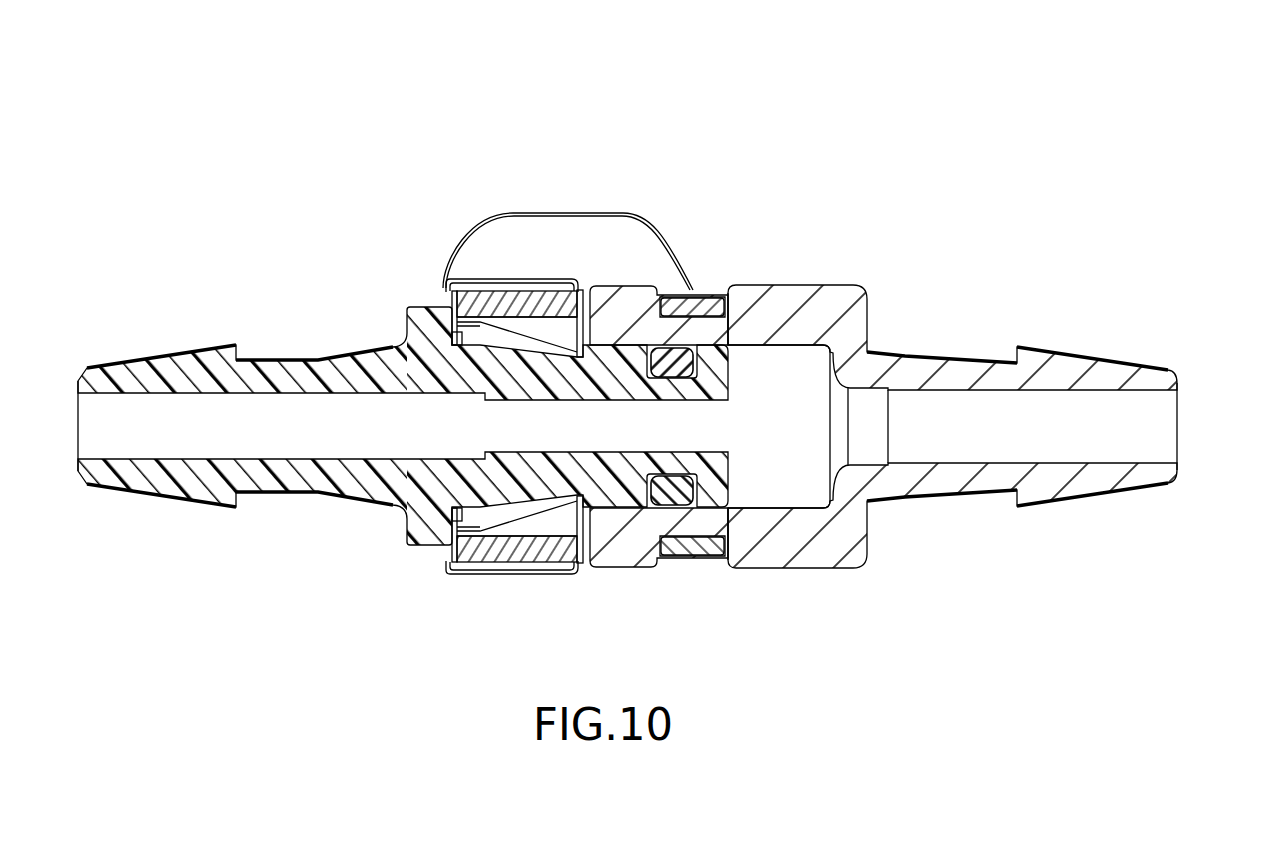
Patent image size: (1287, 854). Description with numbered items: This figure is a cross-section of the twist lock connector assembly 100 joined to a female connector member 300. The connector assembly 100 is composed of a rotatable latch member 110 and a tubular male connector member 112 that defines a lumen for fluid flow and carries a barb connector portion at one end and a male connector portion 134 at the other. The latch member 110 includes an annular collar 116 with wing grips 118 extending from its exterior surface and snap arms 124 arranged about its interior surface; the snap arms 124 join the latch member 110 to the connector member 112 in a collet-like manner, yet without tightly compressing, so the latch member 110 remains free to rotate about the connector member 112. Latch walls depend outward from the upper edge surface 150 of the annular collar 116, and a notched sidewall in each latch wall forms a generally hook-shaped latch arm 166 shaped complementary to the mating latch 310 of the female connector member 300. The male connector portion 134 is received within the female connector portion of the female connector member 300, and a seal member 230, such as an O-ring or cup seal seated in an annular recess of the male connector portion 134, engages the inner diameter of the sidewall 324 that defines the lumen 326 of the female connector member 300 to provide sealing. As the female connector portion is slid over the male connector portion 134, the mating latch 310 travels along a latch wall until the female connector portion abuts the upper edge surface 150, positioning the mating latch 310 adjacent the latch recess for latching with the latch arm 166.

The twist lock connector assembly 100 is at (457, 107).
The rotatable latch member 110 is at (575, 142).
The male connector member 112 is at (299, 171).
The annular collar 116 is at (467, 298).
The wing grips 118 is at (610, 228).
The snap arms 124 is at (510, 318).
The male connector portion 134 is at (730, 482).
The upper edge surface 150 is at (580, 562).
The latch arm 166 is at (707, 297).
The seal member 230 is at (673, 512).
The female connector member 300 is at (986, 206).
The mating latch 310 is at (627, 297).
The sidewall 324 is at (753, 297).
The lumen 326 is at (1189, 404).